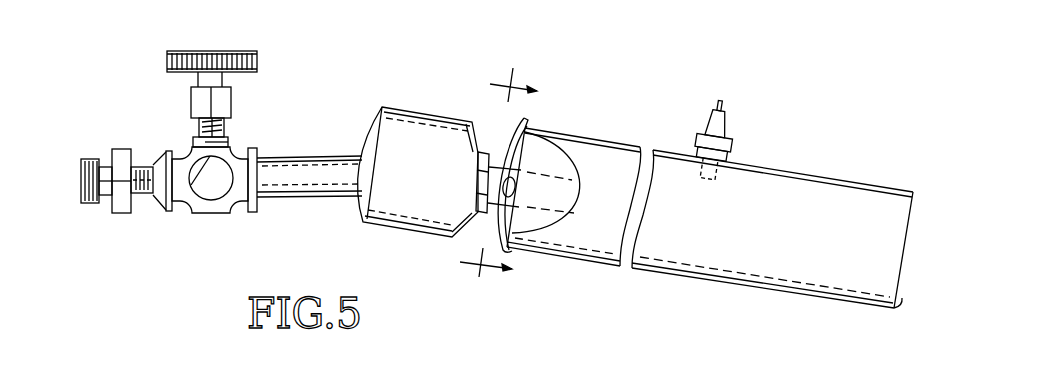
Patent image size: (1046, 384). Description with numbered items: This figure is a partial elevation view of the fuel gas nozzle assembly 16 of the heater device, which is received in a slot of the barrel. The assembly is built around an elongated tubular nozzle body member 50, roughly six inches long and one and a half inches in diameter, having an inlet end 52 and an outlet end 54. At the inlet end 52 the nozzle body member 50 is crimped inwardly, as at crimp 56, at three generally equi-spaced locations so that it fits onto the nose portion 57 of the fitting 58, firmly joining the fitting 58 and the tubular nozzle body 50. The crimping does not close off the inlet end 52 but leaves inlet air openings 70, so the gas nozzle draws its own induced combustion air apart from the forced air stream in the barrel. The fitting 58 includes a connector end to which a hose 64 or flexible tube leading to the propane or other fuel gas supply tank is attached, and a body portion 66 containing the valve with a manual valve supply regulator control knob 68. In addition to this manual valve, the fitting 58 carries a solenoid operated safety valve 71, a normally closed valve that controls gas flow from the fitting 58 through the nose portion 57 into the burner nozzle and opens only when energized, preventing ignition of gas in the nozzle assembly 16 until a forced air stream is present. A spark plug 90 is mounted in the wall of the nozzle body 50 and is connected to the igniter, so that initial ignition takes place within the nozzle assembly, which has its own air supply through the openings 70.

The fuel gas nozzle assembly 16 is at (631, 113).
The tubular nozzle body member 50 is at (798, 188).
The inlet end 52 is at (522, 121).
The outlet end 54 is at (903, 303).
The crimp 56 is at (558, 195).
The nose portion 57 is at (481, 179).
The fitting 58 is at (300, 170).
The hose 64 is at (82, 197).
The body portion 66 is at (207, 205).
The manual valve supply regulator control knob 68 is at (223, 52).
The inlet air openings 70 is at (526, 150).
The solenoid operated safety valve 71 is at (422, 113).
The spark plug 90 is at (726, 126).